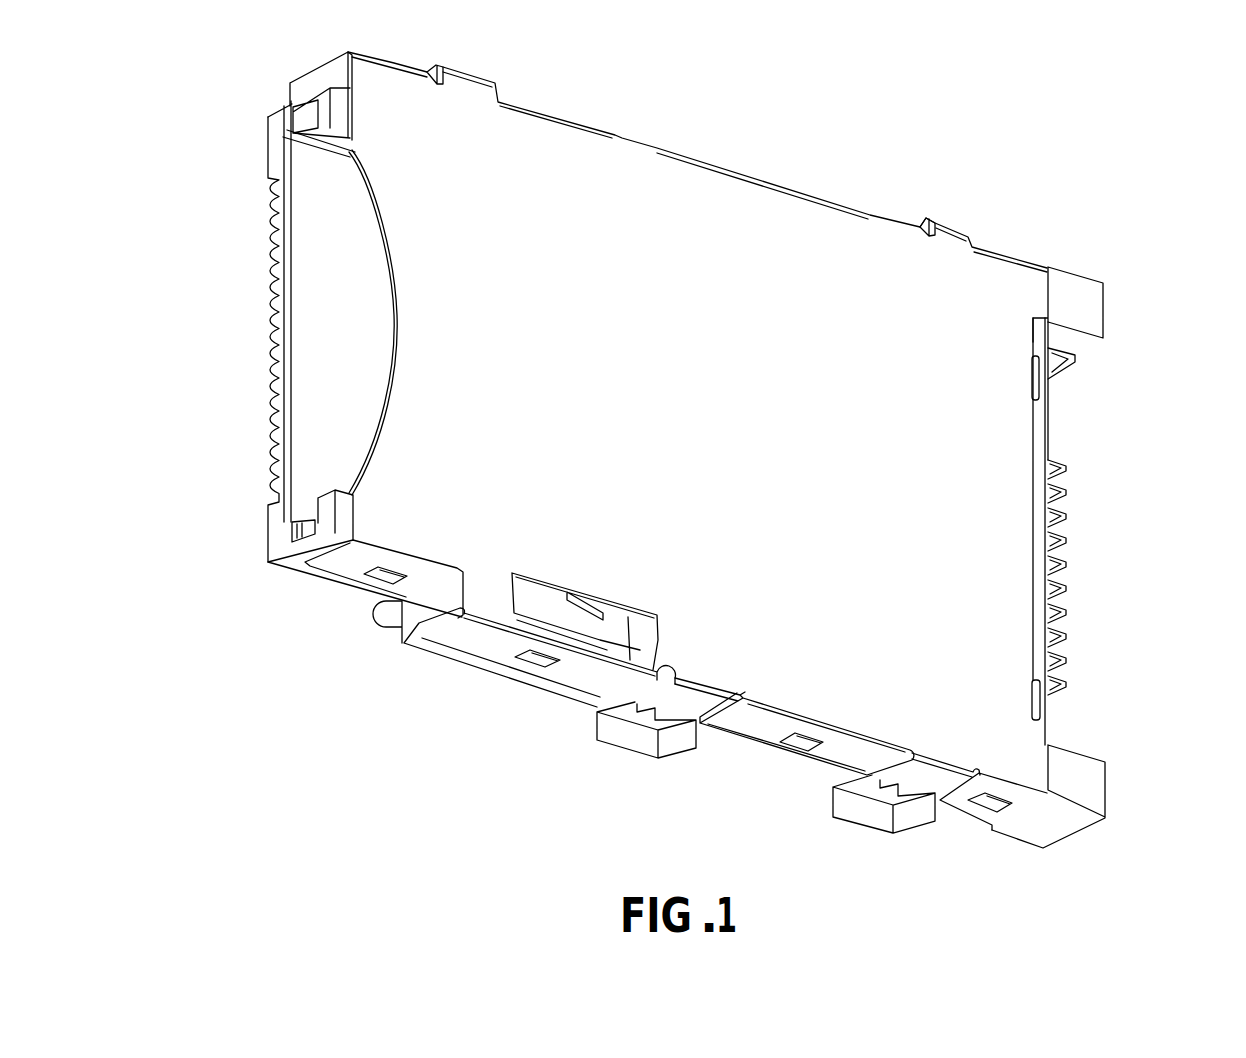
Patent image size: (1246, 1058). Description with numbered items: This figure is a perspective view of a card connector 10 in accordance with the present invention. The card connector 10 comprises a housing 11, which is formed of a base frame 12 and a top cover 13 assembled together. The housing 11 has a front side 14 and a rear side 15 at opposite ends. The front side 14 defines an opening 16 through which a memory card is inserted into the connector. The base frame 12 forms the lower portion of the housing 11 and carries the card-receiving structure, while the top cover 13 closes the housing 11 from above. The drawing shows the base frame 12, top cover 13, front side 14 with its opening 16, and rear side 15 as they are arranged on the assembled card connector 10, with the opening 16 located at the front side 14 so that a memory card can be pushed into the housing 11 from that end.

The card connector 10 is at (507, 740).
The housing 11 is at (758, 762).
The base frame 12 is at (410, 634).
The top cover 13 is at (757, 228).
The front side 14 is at (268, 531).
The rear side 15 is at (1107, 788).
The opening 16 is at (327, 356).